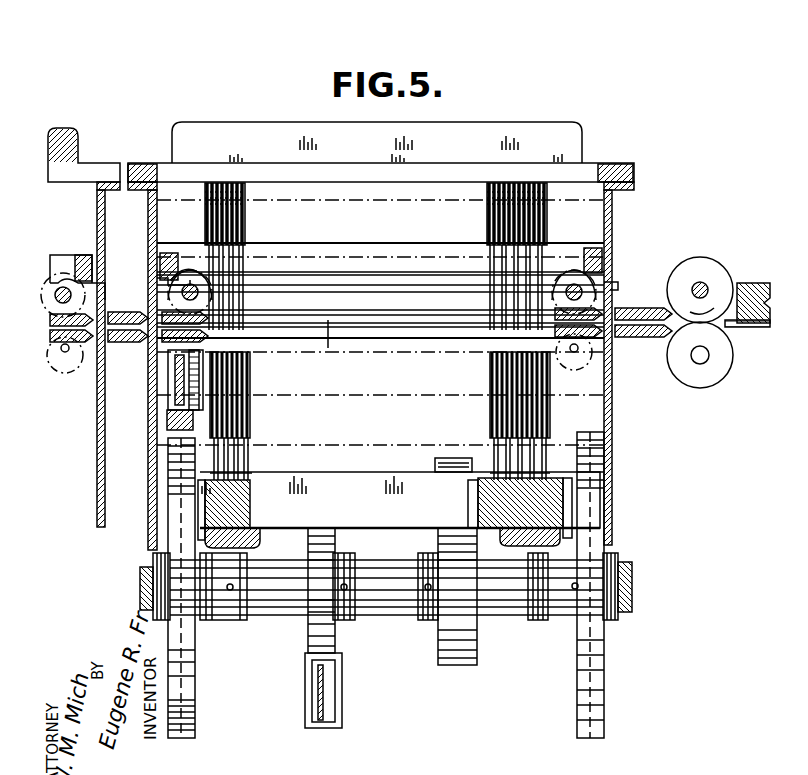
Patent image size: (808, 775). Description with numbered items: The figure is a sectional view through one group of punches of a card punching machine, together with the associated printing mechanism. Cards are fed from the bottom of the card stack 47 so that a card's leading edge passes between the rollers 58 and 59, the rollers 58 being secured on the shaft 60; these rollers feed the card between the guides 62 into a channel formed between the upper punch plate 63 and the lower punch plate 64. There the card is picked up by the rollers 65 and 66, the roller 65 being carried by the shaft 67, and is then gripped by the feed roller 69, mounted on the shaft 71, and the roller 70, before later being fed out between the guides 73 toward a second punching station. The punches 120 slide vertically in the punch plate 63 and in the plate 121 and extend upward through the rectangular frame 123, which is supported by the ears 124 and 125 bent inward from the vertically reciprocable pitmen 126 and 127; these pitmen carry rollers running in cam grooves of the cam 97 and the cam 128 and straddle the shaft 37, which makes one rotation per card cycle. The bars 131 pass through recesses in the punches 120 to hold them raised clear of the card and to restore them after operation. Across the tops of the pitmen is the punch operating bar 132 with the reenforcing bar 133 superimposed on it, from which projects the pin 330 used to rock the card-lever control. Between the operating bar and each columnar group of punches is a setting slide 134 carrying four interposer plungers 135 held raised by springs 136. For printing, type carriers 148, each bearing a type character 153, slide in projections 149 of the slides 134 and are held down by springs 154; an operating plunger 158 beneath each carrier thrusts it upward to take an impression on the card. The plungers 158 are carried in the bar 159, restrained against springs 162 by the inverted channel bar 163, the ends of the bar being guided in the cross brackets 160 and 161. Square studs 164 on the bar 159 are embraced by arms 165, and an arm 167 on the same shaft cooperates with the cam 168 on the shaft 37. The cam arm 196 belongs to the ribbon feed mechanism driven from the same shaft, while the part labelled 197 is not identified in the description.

The reenforcing bar 133 is at (515, 134).
The pin 330 is at (262, 136).
The punch operating bar 132 is at (596, 166).
The cam 97 is at (152, 533).
The pitman 126 is at (150, 372).
The pitman 127 is at (613, 408).
The rectangular frame 123 is at (350, 258).
The punches 120 is at (246, 301).
The upper punch plate 63 is at (380, 312).
The lower punch plate 64 is at (380, 338).
The plate 121 is at (320, 345).
The bars 131 is at (486, 262).
The setting slide 134 is at (246, 224).
The interposer plungers 135 is at (238, 182).
The springs 136 is at (246, 191).
The feed roller 69 is at (191, 270).
The shaft 71 is at (165, 284).
The ear 124 is at (160, 276).
The guides 73 is at (128, 318).
The roller 70 is at (160, 350).
The shaft 67 is at (576, 285).
The ear 125 is at (600, 272).
The roller 65 is at (50, 288).
The guides 62 is at (645, 322).
The roller 66 is at (72, 364).
The rollers 58 is at (697, 268).
The shaft 60 is at (706, 288).
The rollers 59 is at (706, 378).
The card stack 47 is at (760, 284).
The projections 149 is at (251, 375).
The type character 153 is at (230, 358).
The type carriers 148 is at (251, 413).
The springs 154 is at (251, 431).
The operating plunger 158 is at (251, 459).
The inverted channel bar 163 is at (378, 484).
The arm 167 is at (455, 458).
The square studs 164 is at (205, 507).
The arms 165 is at (200, 492).
The bar 159 is at (251, 516).
The springs 162 is at (480, 501).
The cross bracket 160 is at (250, 543).
The cross bracket 161 is at (514, 540).
The shaft 37 is at (388, 592).
The cam 128 is at (592, 636).
The gear 197 is at (335, 640).
The cam arm 196 is at (342, 713).
The cam 168 is at (458, 648).